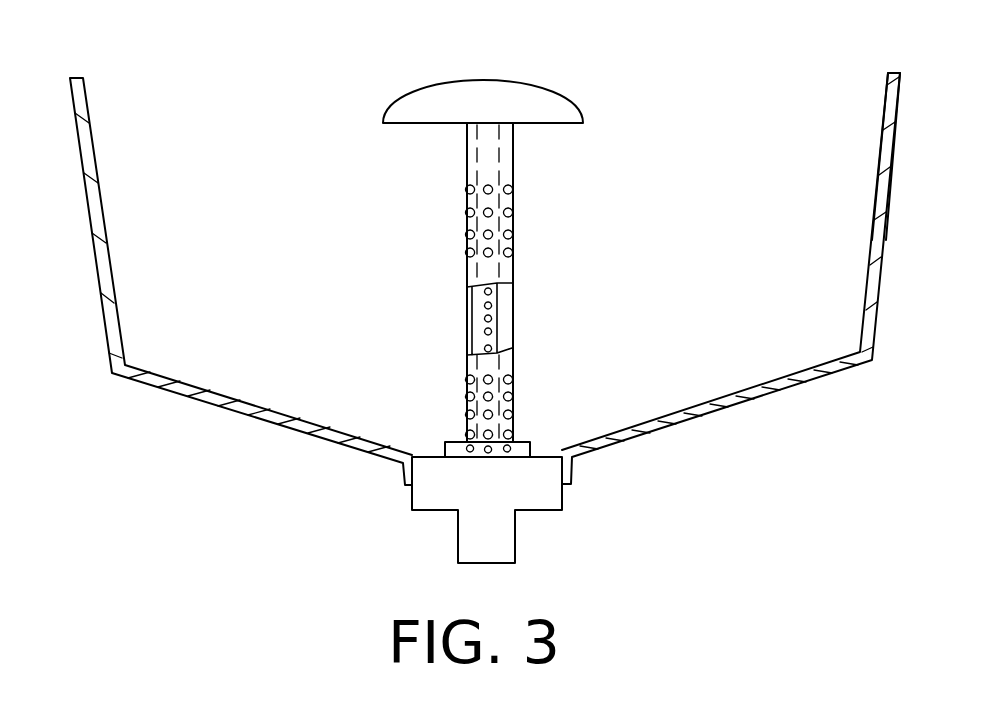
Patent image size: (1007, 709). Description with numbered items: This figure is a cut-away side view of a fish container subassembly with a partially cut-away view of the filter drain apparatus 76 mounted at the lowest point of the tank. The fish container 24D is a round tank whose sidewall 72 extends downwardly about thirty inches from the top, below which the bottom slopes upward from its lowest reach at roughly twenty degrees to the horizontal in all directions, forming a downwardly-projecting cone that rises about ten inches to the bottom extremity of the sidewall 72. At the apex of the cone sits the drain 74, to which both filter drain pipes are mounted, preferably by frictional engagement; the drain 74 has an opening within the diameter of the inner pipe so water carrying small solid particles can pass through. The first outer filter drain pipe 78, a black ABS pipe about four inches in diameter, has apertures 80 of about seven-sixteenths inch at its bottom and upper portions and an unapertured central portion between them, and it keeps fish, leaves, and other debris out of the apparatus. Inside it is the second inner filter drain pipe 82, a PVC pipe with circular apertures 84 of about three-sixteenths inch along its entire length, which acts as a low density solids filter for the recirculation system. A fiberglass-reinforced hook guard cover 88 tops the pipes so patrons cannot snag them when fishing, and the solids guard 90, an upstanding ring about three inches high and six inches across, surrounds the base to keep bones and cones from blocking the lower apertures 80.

The fish container 24D is at (791, 390).
The sidewall 72 is at (876, 199).
The drain 74 is at (516, 529).
The filter drain apparatus 76 is at (513, 257).
The first outer filter drain pipe 78 is at (513, 393).
The apertures 80 is at (484, 209).
The second inner filter drain pipe 82 is at (499, 316).
The apertures 84 is at (484, 328).
The hook guard cover 88 is at (565, 93).
The solids guard 90 is at (533, 444).